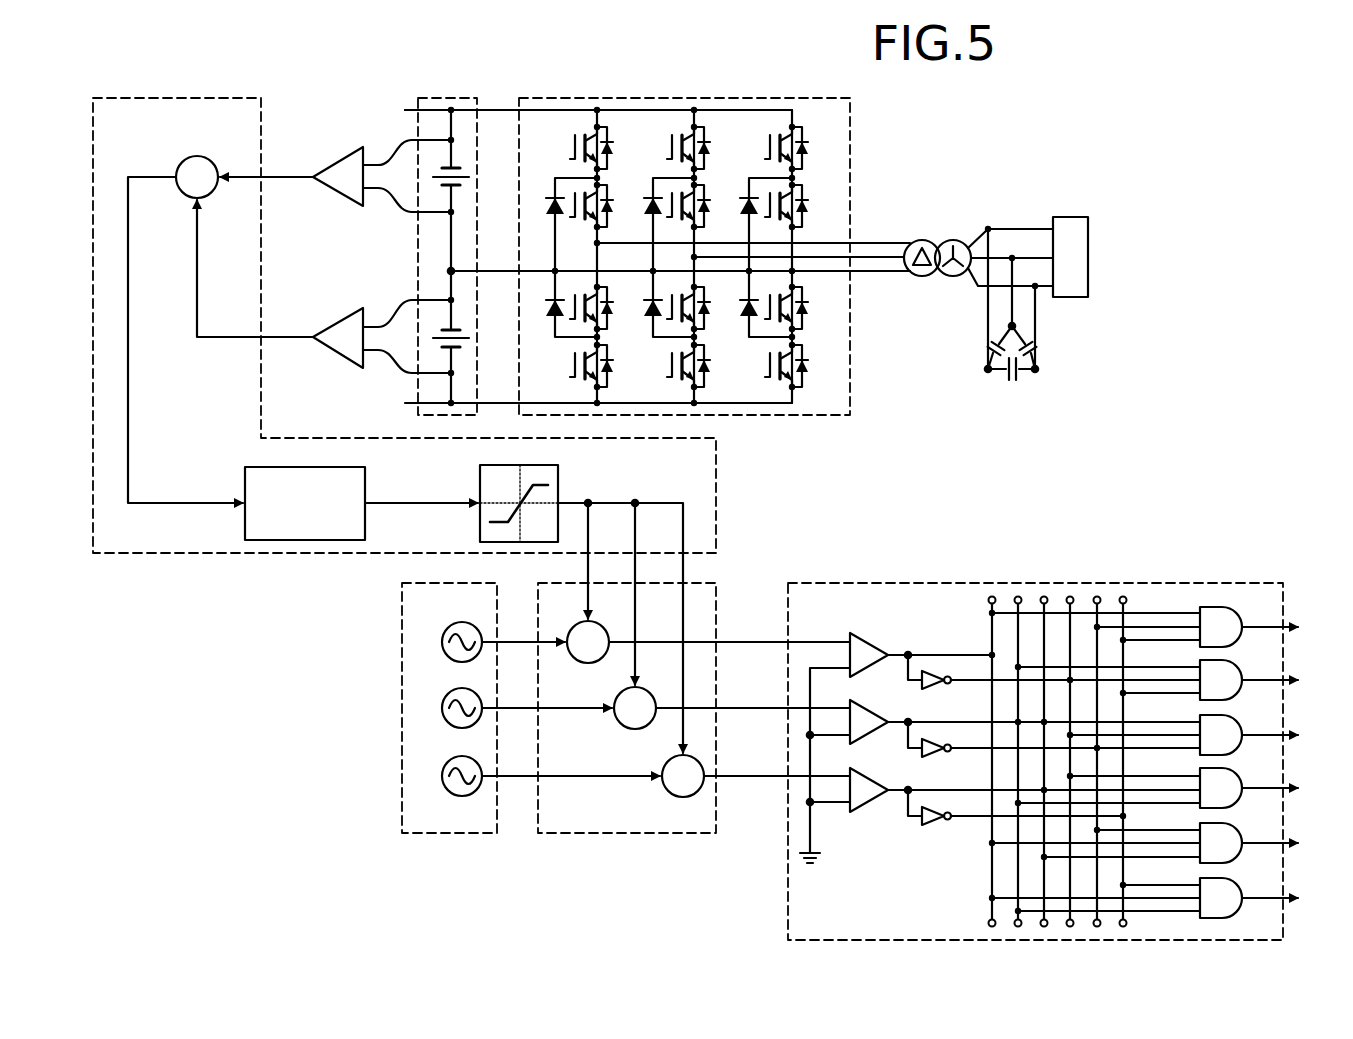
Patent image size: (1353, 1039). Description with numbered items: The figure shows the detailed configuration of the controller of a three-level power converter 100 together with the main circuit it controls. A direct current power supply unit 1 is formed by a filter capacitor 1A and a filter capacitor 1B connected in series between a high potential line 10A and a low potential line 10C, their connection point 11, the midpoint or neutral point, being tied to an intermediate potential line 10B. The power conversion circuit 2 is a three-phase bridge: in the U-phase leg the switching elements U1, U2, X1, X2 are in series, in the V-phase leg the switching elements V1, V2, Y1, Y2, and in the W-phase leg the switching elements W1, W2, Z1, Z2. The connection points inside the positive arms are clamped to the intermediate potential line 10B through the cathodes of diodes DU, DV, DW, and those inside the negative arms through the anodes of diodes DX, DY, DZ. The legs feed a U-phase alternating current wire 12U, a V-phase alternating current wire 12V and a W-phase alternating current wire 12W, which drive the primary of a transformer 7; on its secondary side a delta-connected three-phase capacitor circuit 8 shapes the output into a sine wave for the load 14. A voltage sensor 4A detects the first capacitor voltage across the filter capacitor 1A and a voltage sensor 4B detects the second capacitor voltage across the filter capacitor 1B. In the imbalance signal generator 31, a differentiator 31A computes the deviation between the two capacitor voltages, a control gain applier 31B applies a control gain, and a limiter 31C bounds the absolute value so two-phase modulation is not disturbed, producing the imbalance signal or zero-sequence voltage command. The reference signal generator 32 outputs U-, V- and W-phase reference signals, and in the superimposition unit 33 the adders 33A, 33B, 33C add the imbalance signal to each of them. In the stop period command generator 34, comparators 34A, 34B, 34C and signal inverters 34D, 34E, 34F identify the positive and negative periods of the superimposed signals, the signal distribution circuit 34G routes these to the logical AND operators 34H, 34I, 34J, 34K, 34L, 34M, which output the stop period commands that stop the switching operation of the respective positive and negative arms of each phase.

The three-level power converter 100 is at (677, 66).
The direct current power supply unit 1 is at (452, 97).
The filter capacitor 1A is at (445, 189).
The filter capacitor 1B is at (445, 351).
The connection point 11 is at (451, 271).
The high potential line 10A is at (493, 110).
The intermediate potential line 10B is at (492, 271).
The low potential line 10C is at (492, 403).
The power conversion circuit 2 is at (808, 97).
The switching element U1 is at (606, 148).
The switching element U2 is at (606, 206).
The switching element V1 is at (703, 148).
The switching element V2 is at (703, 206).
The switching element W1 is at (804, 148).
The switching element W2 is at (804, 206).
The switching element X1 is at (606, 308).
The switching element X2 is at (606, 366).
The switching element Y1 is at (702, 308).
The switching element Y2 is at (702, 366).
The switching element Z1 is at (801, 308).
The switching element Z2 is at (801, 366).
The diode DU is at (560, 224).
The diode DV is at (657, 224).
The diode DW is at (753, 224).
The diode DX is at (560, 304).
The diode DY is at (658, 304).
The diode DZ is at (754, 304).
The U-phase alternating current wire 12U is at (891, 243).
The V-phase alternating current wire 12V is at (882, 261).
The W-phase alternating current wire 12W is at (898, 274).
The transformer 7 is at (940, 226).
The delta-connected three-phase capacitor circuit 8 is at (1012, 388).
The load 14 is at (1080, 218).
The voltage sensor 4A is at (332, 161).
The voltage sensor 4B is at (332, 320).
The imbalance signal generator 31 is at (190, 98).
The differentiator 31A is at (198, 155).
The control gain applier 31B is at (354, 457).
The limiter 31C is at (547, 455).
The reference signal generator 32 is at (466, 583).
The superimposition unit 33 is at (706, 583).
The adder 33A is at (573, 658).
The adder 33B is at (620, 724).
The adder 33C is at (668, 792).
The stop period command generator 34 is at (1182, 583).
The comparator 34A is at (874, 633).
The comparator 34B is at (874, 702).
The comparator 34C is at (874, 770).
The signal inverter 34D is at (934, 691).
The signal inverter 34E is at (934, 759).
The signal inverter 34F is at (934, 827).
The signal distribution circuit 34G is at (1058, 596).
The logical AND operator 34H is at (1229, 607).
The logical AND operator 34I is at (1229, 660).
The logical AND operator 34J is at (1229, 715).
The logical AND operator 34K is at (1229, 768).
The logical AND operator 34L is at (1229, 823).
The logical AND operator 34M is at (1229, 878).